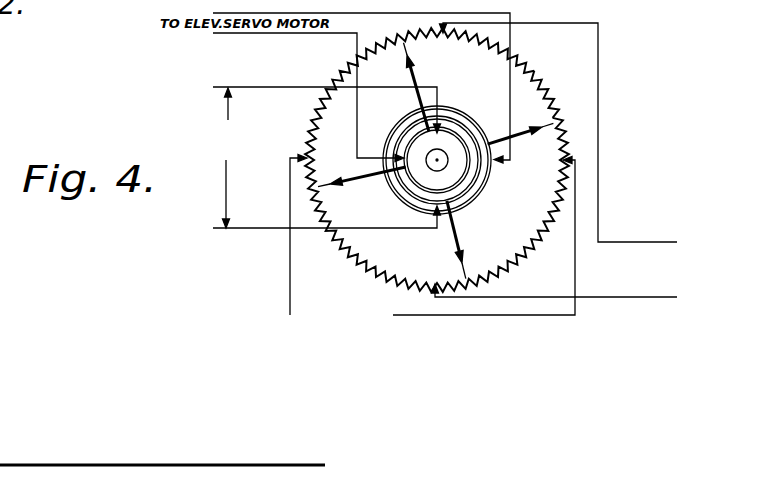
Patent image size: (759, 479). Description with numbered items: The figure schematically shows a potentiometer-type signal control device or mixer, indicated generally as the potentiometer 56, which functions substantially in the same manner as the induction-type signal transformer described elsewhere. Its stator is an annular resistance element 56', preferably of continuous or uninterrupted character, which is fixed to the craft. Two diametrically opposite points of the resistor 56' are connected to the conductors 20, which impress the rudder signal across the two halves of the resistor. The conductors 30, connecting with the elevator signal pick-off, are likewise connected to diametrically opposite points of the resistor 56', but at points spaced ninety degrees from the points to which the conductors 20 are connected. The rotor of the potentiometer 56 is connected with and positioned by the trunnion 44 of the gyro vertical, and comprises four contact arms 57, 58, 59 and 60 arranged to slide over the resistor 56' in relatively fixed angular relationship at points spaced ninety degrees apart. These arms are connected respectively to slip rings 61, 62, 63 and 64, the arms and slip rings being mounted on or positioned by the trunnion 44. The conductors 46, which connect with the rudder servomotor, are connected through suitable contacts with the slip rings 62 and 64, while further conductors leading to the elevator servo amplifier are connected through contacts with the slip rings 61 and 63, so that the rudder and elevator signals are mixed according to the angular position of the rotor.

The conductors 20 is at (628, 242).
The conductors 30 is at (288, 288).
The trunnion 44 is at (430, 170).
The conductors 46 is at (262, 86).
The potentiometer 56 is at (479, 160).
The annular resistance element 56' is at (553, 86).
The contact arm 57 is at (530, 132).
The contact arm 58 is at (457, 238).
The contact arm 59 is at (350, 182).
The contact arm 60 is at (417, 82).
The slip ring 61 is at (490, 174).
The slip ring 62 is at (470, 190).
The slip ring 63 is at (455, 133).
The slip ring 64 is at (446, 136).